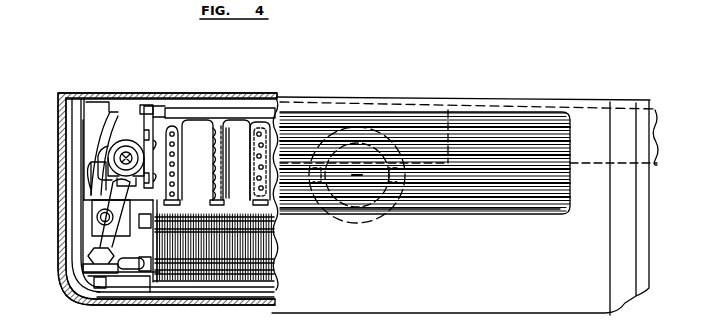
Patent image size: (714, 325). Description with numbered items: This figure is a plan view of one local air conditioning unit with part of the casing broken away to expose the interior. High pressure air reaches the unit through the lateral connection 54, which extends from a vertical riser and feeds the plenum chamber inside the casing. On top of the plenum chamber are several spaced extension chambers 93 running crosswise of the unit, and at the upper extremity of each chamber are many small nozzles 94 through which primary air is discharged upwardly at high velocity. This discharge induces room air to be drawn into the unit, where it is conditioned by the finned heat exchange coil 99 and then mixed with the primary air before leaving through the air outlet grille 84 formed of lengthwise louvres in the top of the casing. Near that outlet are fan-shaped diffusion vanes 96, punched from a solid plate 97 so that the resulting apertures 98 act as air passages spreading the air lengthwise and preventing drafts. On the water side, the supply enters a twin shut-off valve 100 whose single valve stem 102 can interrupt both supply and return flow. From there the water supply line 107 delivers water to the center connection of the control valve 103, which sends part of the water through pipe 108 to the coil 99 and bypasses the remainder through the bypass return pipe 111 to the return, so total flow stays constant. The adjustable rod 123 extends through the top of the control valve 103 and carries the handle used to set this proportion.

The lateral connection 54 is at (469, 103).
The air outlet grille 84 is at (524, 138).
The extension chambers 93 is at (172, 128).
The nozzles 94 is at (211, 110).
The diffusion vanes 96 is at (229, 143).
The solid plate 97 is at (268, 110).
The apertures 98 is at (241, 152).
The coil 99 is at (133, 266).
The shut-off valve 100 is at (86, 251).
The valve stem 102 is at (95, 288).
The control valve 103 is at (108, 148).
The water supply line 107 is at (103, 207).
The pipe 108 is at (89, 173).
The bypass return pipe 111 is at (84, 246).
The adjustable rod 123 is at (126, 156).